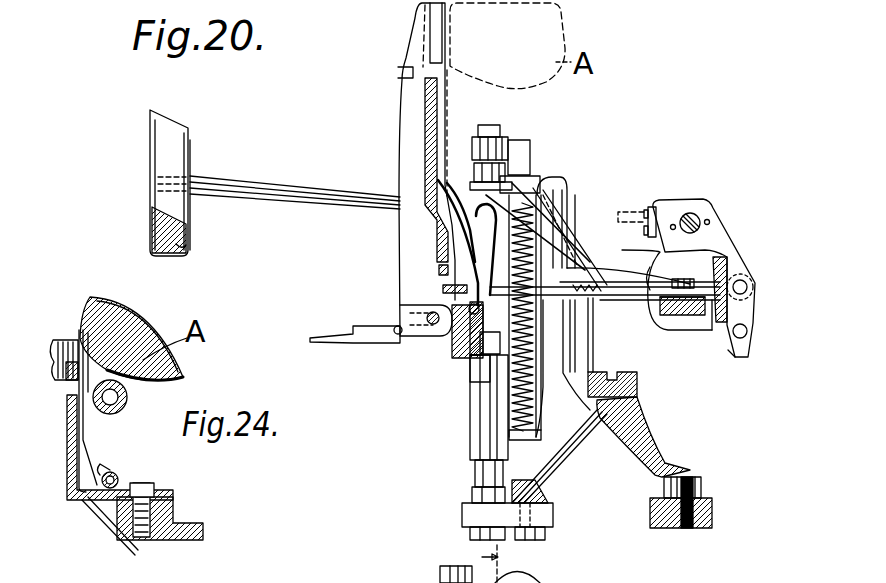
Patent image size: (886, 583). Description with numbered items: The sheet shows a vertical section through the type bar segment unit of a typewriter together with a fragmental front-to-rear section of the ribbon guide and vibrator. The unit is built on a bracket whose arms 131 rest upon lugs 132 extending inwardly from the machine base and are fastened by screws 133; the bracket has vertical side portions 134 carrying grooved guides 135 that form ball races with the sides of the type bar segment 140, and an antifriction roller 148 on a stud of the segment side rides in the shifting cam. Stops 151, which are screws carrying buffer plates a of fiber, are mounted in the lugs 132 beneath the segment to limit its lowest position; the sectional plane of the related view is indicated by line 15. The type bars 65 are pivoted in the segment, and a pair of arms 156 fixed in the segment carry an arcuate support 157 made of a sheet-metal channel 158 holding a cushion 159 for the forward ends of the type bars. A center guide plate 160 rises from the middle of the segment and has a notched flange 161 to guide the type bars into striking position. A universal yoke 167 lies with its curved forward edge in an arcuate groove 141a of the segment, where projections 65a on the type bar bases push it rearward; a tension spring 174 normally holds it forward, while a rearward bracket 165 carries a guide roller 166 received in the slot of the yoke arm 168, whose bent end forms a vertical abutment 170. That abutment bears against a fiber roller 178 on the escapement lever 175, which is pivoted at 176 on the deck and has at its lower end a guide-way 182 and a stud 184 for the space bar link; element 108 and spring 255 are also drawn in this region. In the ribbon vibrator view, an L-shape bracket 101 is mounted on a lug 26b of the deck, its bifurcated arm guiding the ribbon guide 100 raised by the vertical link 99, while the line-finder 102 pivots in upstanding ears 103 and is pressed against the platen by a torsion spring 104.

In FIG. 20, the arcuate support 157 is at (110, 195).
In FIG. 20, the channel 158 is at (152, 252).
In FIG. 20, the cushion 159 is at (184, 251).
In FIG. 20, the arms 156 is at (276, 200).
In FIG. 20, the type bars 65 is at (408, 153).
In FIG. 20, the notched flange 161 is at (403, 75).
In FIG. 20, the center guide plate 160 is at (437, 275).
In FIG. 20, the universal yoke 167 is at (523, 192).
In FIG. 20, the compression spring 255 is at (524, 300).
In FIG. 20, the vertical side portions 134 is at (550, 356).
In FIG. 20, the arms 131 is at (648, 456).
In FIG. 20, the screws 133 is at (695, 478).
In FIG. 20, the lugs 132 is at (665, 530).
In FIG. 20, the type bar segment 140 is at (467, 342).
In FIG. 20, the arcuate groove 141a is at (445, 300).
In FIG. 20, the projections 65a is at (400, 330).
In FIG. 20, the buffer plates a is at (474, 489).
In FIG. 20, the stops 151 is at (470, 509).
In FIG. 20, the section line 15 is at (460, 563).
In FIG. 20, the antifriction roller 148 is at (440, 574).
In FIG. 20, the grooved guides 135 is at (514, 579).
In FIG. 20, the tension spring 174 is at (613, 296).
In FIG. 20, the bracket 165 is at (642, 300).
In FIG. 20, the arm 168 is at (688, 313).
In FIG. 20, the clamp 108 is at (688, 313).
In FIG. 20, the guide roller 166 is at (630, 259).
In FIG. 20, the pivot 176 is at (693, 217).
In FIG. 20, the fiber roller 178 is at (723, 258).
In FIG. 20, the escapement lever 175 is at (754, 300).
In FIG. 20, the stud 184 is at (747, 338).
In FIG. 20, the guide-way 182 is at (733, 350).
In FIG. 20, the vertical abutment 170 is at (718, 332).
In FIG. 24, the ribbon guide 100 is at (68, 386).
In FIG. 24, the L-shape bracket 101 is at (74, 425).
In FIG. 24, the line-finder 102 is at (84, 445).
In FIG. 24, the torsion spring 104 is at (117, 476).
In FIG. 24, the upstanding ears 103 is at (123, 486).
In FIG. 24, the lug 26b is at (186, 526).
In FIG. 24, the vertical link 99 is at (100, 523).